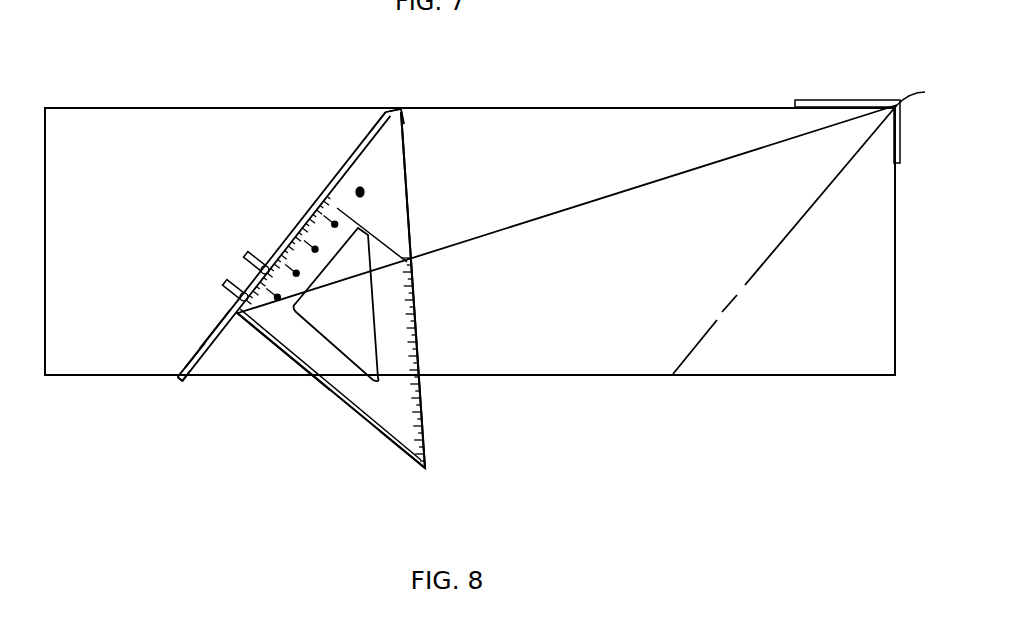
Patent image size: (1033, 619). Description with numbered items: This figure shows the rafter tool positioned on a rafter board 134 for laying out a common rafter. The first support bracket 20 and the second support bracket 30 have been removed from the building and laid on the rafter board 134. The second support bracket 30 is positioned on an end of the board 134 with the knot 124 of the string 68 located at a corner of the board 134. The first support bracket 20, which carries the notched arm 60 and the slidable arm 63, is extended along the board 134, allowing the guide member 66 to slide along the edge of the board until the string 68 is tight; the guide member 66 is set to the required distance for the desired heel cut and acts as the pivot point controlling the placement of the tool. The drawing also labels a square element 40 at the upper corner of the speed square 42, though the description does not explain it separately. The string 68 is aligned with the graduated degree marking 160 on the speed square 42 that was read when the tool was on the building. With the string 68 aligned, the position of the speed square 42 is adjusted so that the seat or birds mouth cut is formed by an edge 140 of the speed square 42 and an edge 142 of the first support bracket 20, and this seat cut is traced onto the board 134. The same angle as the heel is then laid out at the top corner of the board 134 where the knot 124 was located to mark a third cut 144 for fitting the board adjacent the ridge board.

The first support bracket 20 is at (218, 327).
The second support bracket 30 is at (833, 100).
The triangular square 40 is at (383, 312).
The speed square 42 is at (393, 415).
The notched arm 60 is at (388, 112).
The slidable arm 63 is at (213, 336).
The guide member 66 is at (180, 378).
The string 68 is at (603, 197).
The knot 124 is at (897, 104).
The rafter board 134 is at (473, 125).
The edge of the speed square 140 is at (313, 380).
The edge of the first support bracket 142 is at (203, 357).
The third cut 144 is at (773, 258).
The graduated degree markings 160 is at (412, 281).